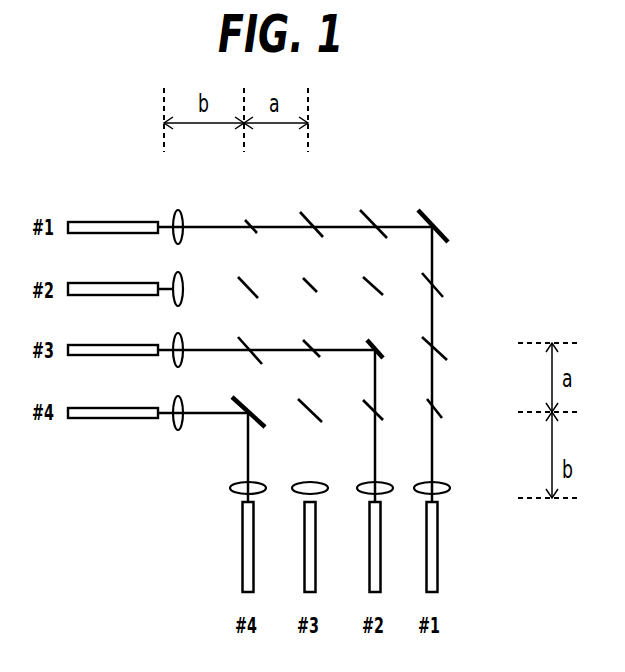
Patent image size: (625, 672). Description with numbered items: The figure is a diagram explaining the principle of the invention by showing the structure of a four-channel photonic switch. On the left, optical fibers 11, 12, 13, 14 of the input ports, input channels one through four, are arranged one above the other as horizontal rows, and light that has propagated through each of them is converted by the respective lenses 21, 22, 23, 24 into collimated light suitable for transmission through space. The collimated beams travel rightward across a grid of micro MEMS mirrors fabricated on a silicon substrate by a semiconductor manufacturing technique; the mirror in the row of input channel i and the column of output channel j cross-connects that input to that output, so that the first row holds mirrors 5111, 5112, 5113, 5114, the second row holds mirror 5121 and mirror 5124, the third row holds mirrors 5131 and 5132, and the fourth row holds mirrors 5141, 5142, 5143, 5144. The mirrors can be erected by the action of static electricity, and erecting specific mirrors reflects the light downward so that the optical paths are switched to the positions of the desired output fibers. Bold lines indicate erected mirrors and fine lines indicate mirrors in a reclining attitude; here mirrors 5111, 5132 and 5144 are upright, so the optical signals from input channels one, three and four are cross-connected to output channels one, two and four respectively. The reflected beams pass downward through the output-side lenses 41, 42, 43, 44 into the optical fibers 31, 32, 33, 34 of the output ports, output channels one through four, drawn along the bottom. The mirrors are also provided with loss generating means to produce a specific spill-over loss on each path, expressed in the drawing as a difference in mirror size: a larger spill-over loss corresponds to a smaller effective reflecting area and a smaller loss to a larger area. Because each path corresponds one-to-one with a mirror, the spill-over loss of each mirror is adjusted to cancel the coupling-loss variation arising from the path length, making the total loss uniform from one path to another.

The optical fiber 11 is at (113, 205).
The optical fiber 12 is at (113, 269).
The optical fiber 13 is at (113, 331).
The optical fiber 14 is at (113, 394).
The lens 21 is at (183, 205).
The lens 22 is at (161, 274).
The lens 23 is at (159, 337).
The lens 24 is at (159, 400).
The MEMS mirror 5111 is at (443, 207).
The MEMS mirror 5112 is at (379, 199).
The MEMS mirror 5113 is at (321, 199).
The MEMS mirror 5114 is at (255, 199).
The MEMS mirror 5121 is at (453, 271).
The MEMS mirror 5124 is at (229, 297).
The MEMS mirror 5131 is at (453, 335).
The MEMS mirror 5132 is at (388, 329).
The MEMS mirror 5141 is at (413, 428).
The MEMS mirror 5142 is at (354, 428).
The MEMS mirror 5143 is at (297, 428).
The MEMS mirror 5144 is at (240, 395).
The lens 41 is at (440, 506).
The lens 42 is at (382, 509).
The lens 43 is at (317, 509).
The lens 44 is at (257, 509).
The optical fiber 31 is at (453, 547).
The optical fiber 32 is at (394, 547).
The optical fiber 33 is at (329, 547).
The optical fiber 34 is at (266, 547).